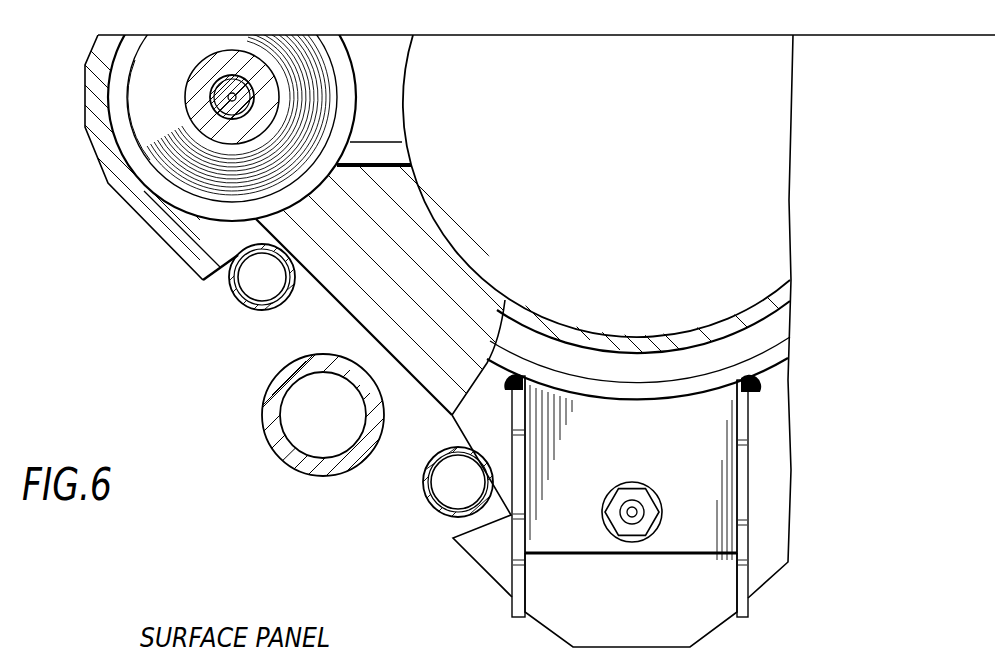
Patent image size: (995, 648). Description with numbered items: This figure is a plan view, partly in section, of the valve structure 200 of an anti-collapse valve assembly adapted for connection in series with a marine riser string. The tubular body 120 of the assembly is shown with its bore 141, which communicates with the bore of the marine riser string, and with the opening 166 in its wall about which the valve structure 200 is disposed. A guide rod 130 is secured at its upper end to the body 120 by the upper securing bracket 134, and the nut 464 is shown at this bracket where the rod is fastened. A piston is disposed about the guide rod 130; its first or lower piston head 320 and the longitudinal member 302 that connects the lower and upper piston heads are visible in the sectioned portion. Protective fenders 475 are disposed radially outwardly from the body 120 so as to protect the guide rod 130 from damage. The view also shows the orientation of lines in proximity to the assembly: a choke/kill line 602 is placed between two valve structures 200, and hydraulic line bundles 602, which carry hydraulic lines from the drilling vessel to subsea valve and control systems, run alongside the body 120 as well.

The body 120 is at (773, 328).
The guide rod 130 is at (213, 97).
The upper securing bracket 134 is at (718, 420).
The bore 141 is at (645, 144).
The opening 166 is at (383, 113).
The valve structure 200 is at (118, 223).
The longitudinal member 302 is at (205, 73).
The first or lower piston head 320 is at (210, 180).
The nut 464 is at (633, 525).
The protective fenders 475 is at (513, 540).
The choke/kill line 602 is at (233, 295).